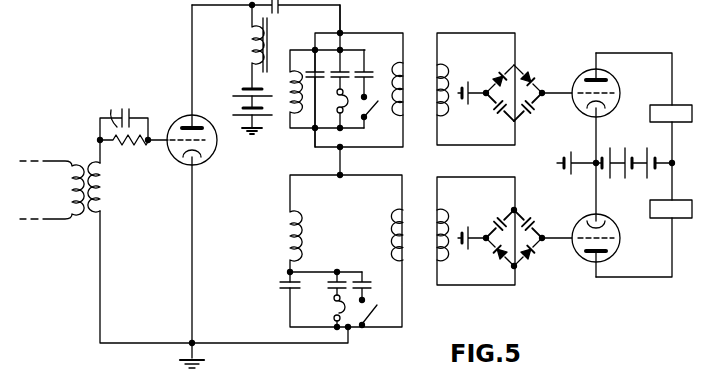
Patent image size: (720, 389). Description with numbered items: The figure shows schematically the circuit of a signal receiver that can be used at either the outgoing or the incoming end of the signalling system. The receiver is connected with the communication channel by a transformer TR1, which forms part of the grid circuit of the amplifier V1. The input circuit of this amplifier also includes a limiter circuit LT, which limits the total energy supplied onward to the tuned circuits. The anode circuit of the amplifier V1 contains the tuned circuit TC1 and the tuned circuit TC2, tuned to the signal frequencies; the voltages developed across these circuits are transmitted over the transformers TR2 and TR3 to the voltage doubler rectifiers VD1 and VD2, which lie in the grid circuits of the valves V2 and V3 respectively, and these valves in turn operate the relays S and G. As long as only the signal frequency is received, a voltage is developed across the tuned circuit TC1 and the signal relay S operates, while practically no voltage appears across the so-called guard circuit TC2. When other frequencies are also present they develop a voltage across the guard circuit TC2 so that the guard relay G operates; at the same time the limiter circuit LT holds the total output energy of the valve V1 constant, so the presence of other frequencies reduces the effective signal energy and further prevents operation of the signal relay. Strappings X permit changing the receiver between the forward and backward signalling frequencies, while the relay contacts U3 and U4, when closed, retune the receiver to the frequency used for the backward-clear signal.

The transformer TR1 is at (60, 181).
The limiter circuit LT is at (133, 117).
The amplifier V1 is at (174, 122).
The tuned circuit TC1 is at (330, 40).
The strappings X is at (333, 205).
The relay contact U3 is at (375, 89).
The transformer TR2 is at (453, 89).
The voltage doubler rectifier VD1 is at (521, 70).
The valve V2 is at (617, 94).
The signal relay S is at (651, 108).
The guard relay G is at (652, 220).
The guard circuit TC2 is at (297, 205).
The transformer TR3 is at (453, 231).
The voltage doubler rectifier VD2 is at (515, 245).
The valve V3 is at (618, 243).
The relay contact U4 is at (375, 300).